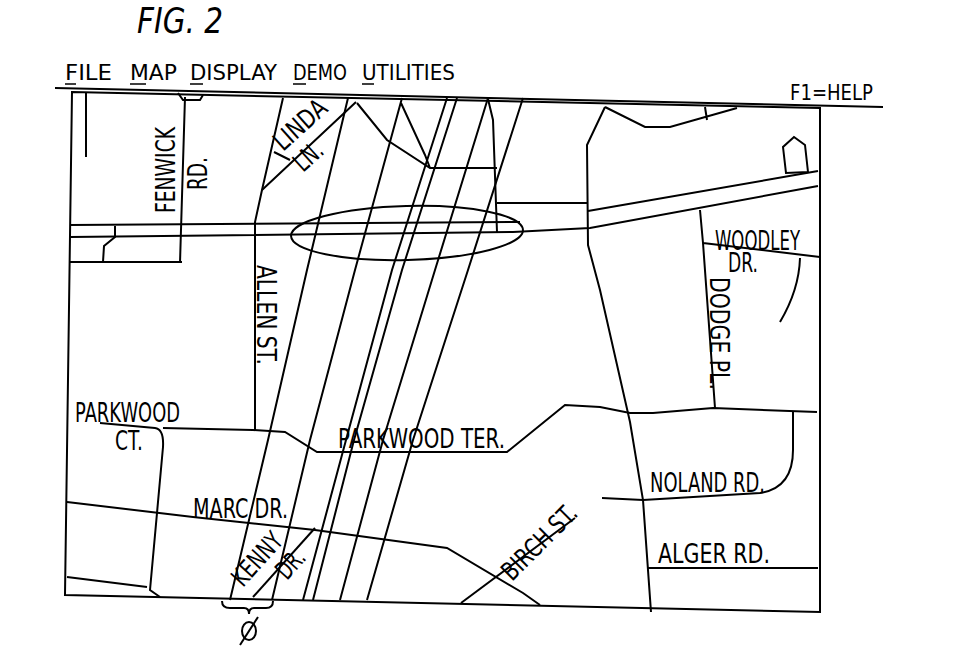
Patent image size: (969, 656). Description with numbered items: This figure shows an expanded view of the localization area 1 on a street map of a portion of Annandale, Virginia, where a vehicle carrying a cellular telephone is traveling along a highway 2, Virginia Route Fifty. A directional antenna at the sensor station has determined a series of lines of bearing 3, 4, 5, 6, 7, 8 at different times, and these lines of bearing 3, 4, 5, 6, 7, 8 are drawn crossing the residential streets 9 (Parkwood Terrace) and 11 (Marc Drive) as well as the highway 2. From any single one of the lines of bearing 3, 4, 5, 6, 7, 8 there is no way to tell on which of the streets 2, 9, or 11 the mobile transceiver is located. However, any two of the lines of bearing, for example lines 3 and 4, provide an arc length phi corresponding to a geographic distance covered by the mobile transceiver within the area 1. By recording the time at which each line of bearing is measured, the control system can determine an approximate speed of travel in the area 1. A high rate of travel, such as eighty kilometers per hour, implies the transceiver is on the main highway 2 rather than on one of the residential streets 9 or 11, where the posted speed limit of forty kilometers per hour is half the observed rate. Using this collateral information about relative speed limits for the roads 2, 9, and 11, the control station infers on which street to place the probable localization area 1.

The localization area 1 is at (520, 228).
The highway 2 is at (141, 226).
The line of bearing 3 is at (349, 98).
The line of bearing 4 is at (402, 98).
The line of bearing 5 is at (447, 98).
The line of bearing 6 is at (457, 98).
The line of bearing 7 is at (488, 98).
The line of bearing 8 is at (522, 98).
The street 9 is at (565, 405).
The street 11 is at (428, 542).